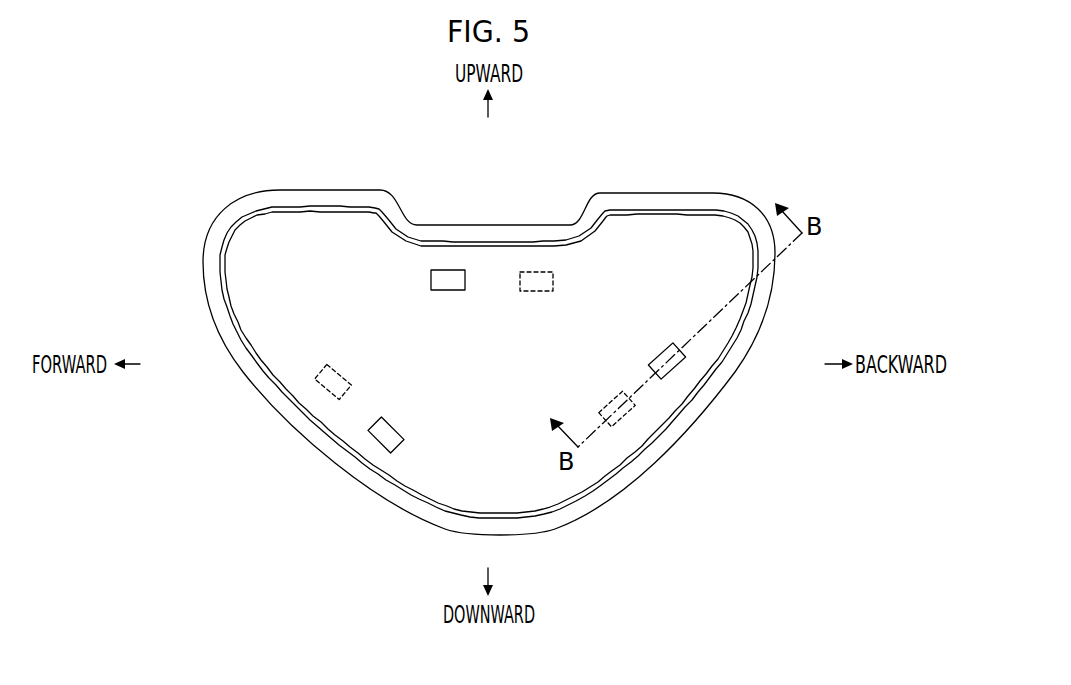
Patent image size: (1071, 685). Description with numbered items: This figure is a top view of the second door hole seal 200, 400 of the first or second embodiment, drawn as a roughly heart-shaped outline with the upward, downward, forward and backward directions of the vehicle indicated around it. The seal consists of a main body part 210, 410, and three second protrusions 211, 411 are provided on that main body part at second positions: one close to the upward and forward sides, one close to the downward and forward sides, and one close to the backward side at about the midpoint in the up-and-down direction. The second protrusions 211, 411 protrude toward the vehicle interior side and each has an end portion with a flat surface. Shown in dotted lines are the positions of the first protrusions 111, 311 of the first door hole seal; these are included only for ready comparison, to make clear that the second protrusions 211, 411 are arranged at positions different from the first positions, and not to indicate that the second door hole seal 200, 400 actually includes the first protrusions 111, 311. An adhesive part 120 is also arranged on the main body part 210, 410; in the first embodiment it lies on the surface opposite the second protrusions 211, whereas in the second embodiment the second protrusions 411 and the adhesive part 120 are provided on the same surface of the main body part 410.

The second door hole seal 200 is at (540, 323).
The second door hole seal 400 is at (774, 149).
The main body part 210 is at (489, 332).
The main body part 410 is at (306, 235).
The second protrusions 211 is at (520, 324).
The second protrusions 411 is at (447, 270).
The first protrusions 111 is at (469, 309).
The first protrusions 311 is at (553, 278).
The adhesive part 120 is at (673, 210).